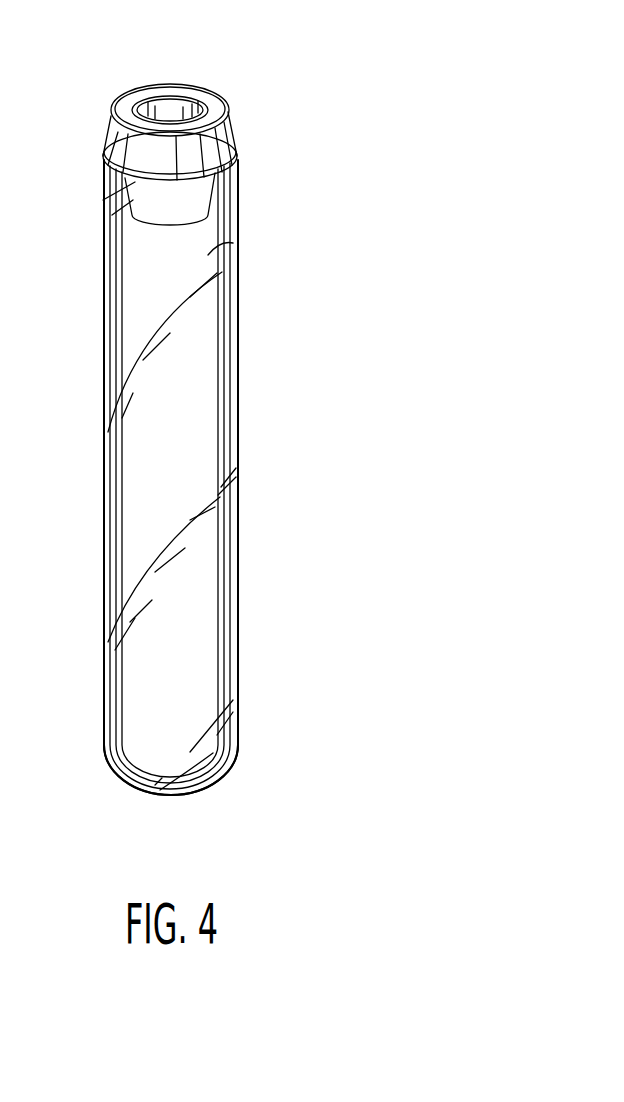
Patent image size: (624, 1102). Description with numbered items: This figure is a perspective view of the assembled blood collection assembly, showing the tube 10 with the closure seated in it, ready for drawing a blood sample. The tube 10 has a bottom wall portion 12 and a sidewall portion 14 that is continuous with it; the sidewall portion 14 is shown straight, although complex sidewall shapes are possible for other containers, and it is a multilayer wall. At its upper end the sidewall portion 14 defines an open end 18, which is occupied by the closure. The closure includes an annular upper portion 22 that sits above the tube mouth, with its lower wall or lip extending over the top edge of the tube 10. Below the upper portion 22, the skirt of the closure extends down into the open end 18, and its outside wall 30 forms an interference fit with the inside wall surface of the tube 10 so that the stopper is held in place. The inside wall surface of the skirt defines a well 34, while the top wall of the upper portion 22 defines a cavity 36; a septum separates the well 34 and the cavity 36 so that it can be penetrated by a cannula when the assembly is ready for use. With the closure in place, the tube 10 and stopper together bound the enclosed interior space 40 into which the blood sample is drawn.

The tube 10 is at (164, 439).
The bottom wall portion 12 is at (160, 797).
The sidewall portion 14 is at (203, 477).
The open end 18 is at (209, 253).
The annular upper portion 22 is at (127, 147).
The outside wall 30 is at (154, 114).
The well 34 is at (217, 107).
The cavity 36 is at (168, 108).
The enclosed interior space 40 is at (138, 468).